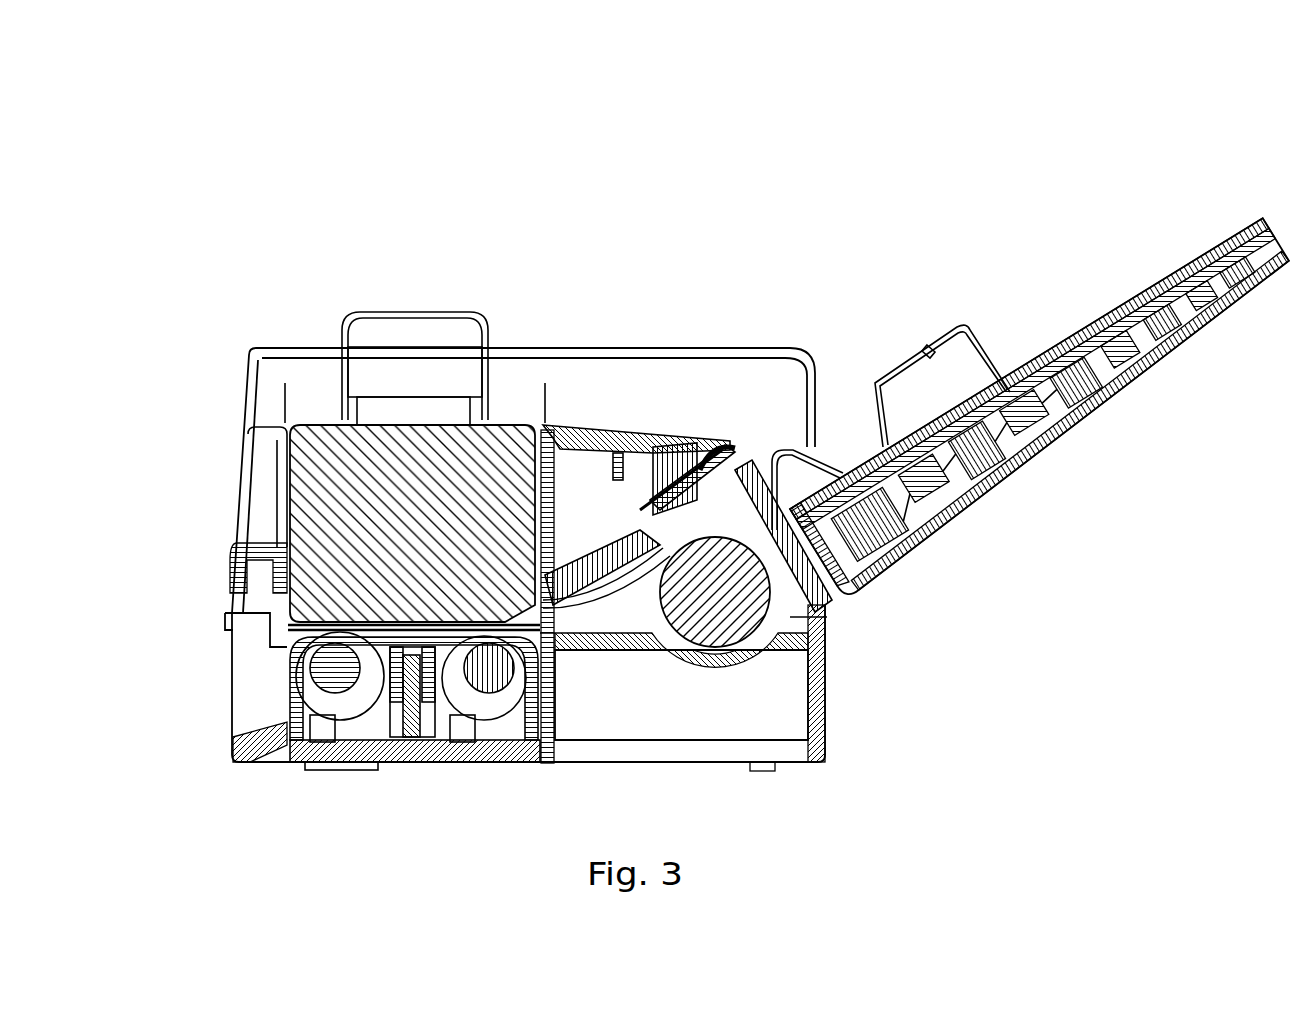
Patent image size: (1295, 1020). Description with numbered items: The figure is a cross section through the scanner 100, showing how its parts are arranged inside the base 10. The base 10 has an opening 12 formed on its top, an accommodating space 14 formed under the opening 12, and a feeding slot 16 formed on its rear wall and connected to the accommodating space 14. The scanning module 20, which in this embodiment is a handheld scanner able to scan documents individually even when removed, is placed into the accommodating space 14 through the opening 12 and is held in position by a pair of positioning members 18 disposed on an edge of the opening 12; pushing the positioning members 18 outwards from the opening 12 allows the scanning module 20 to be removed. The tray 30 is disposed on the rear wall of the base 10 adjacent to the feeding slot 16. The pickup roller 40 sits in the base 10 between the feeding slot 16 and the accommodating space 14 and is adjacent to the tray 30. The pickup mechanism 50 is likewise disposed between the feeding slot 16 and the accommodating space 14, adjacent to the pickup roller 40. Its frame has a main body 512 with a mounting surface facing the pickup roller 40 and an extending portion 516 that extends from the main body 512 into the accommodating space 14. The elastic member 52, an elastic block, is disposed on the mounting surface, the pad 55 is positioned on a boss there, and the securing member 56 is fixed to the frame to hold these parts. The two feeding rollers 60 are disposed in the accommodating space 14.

The scanner 100 is at (88, 78).
The base 10 is at (518, 350).
The opening 12 is at (287, 420).
The accommodating space 14 is at (540, 395).
The feeding slot 16 is at (813, 445).
The positioning members 18 is at (398, 332).
The scanning module 20 is at (333, 475).
The tray 30 is at (1236, 316).
The pickup roller 40 is at (700, 604).
The pickup mechanism 50 is at (832, 182).
The extending portion 516 is at (593, 470).
The main body 512 is at (640, 463).
The securing member 56 is at (695, 463).
The elastic member 52 is at (727, 445).
The pad 55 is at (773, 463).
The feeding rollers 60 is at (483, 700).